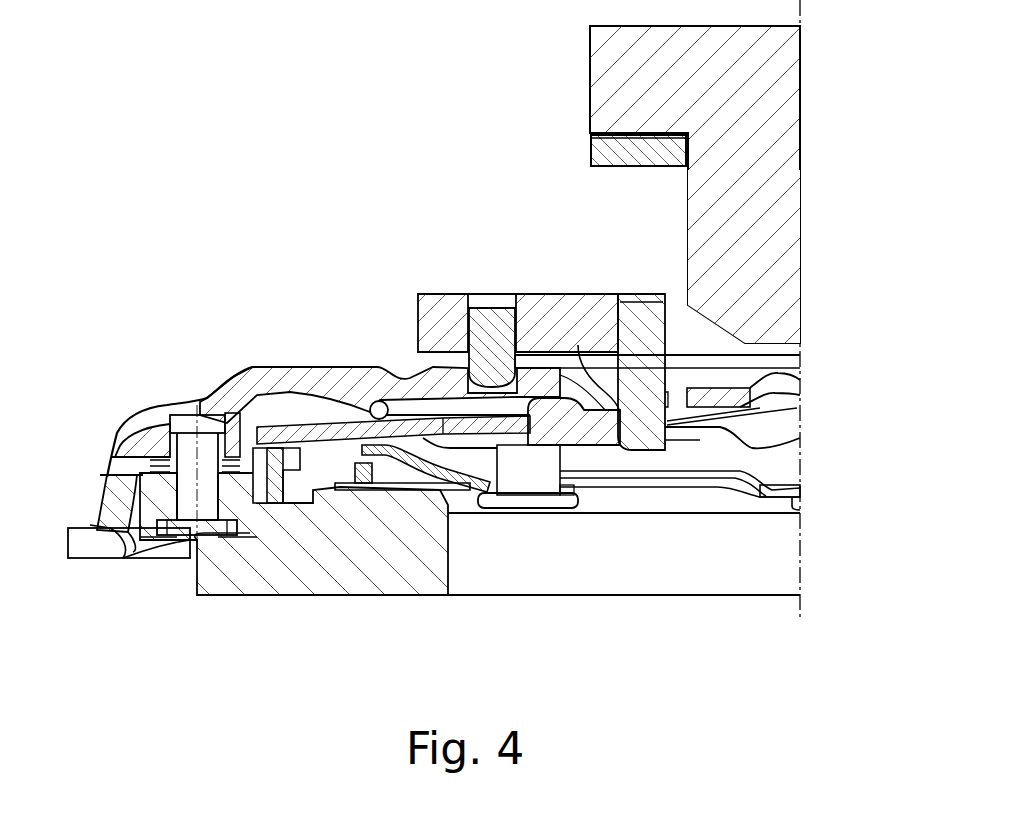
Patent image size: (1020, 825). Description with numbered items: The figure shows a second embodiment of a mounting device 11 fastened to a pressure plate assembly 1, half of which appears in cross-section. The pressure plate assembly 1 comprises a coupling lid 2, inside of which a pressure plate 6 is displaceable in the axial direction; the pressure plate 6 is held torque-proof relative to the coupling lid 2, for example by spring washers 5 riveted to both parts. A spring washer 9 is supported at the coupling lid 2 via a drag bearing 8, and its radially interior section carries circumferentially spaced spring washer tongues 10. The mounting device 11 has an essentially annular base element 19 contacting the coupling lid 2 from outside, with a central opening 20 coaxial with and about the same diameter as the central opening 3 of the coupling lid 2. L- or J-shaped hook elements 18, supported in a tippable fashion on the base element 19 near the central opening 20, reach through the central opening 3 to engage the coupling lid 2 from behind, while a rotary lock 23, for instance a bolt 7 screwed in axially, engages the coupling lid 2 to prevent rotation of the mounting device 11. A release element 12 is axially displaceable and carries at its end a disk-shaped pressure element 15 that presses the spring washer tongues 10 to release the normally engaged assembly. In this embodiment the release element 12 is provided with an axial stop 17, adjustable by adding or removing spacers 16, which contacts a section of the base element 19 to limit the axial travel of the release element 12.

The pressure plate assembly 1 is at (155, 592).
The coupling lid 2 is at (290, 372).
The central opening 3 is at (713, 358).
The spring washers 5 is at (133, 462).
The pressure plate 6 is at (300, 575).
The bolt 7 is at (273, 482).
The drag bearing 8 is at (378, 400).
The spring washer 9 is at (360, 432).
The spring washer tongues 10 is at (790, 383).
The mounting device 11 is at (400, 100).
The release element 12 is at (785, 178).
The pressure element 15 is at (785, 310).
The spacers 16 is at (598, 143).
The stop 17 is at (627, 168).
The hook elements 18 is at (578, 345).
The base element 19 is at (435, 314).
The central opening 20 is at (662, 300).
The rotary locks 23 is at (492, 320).